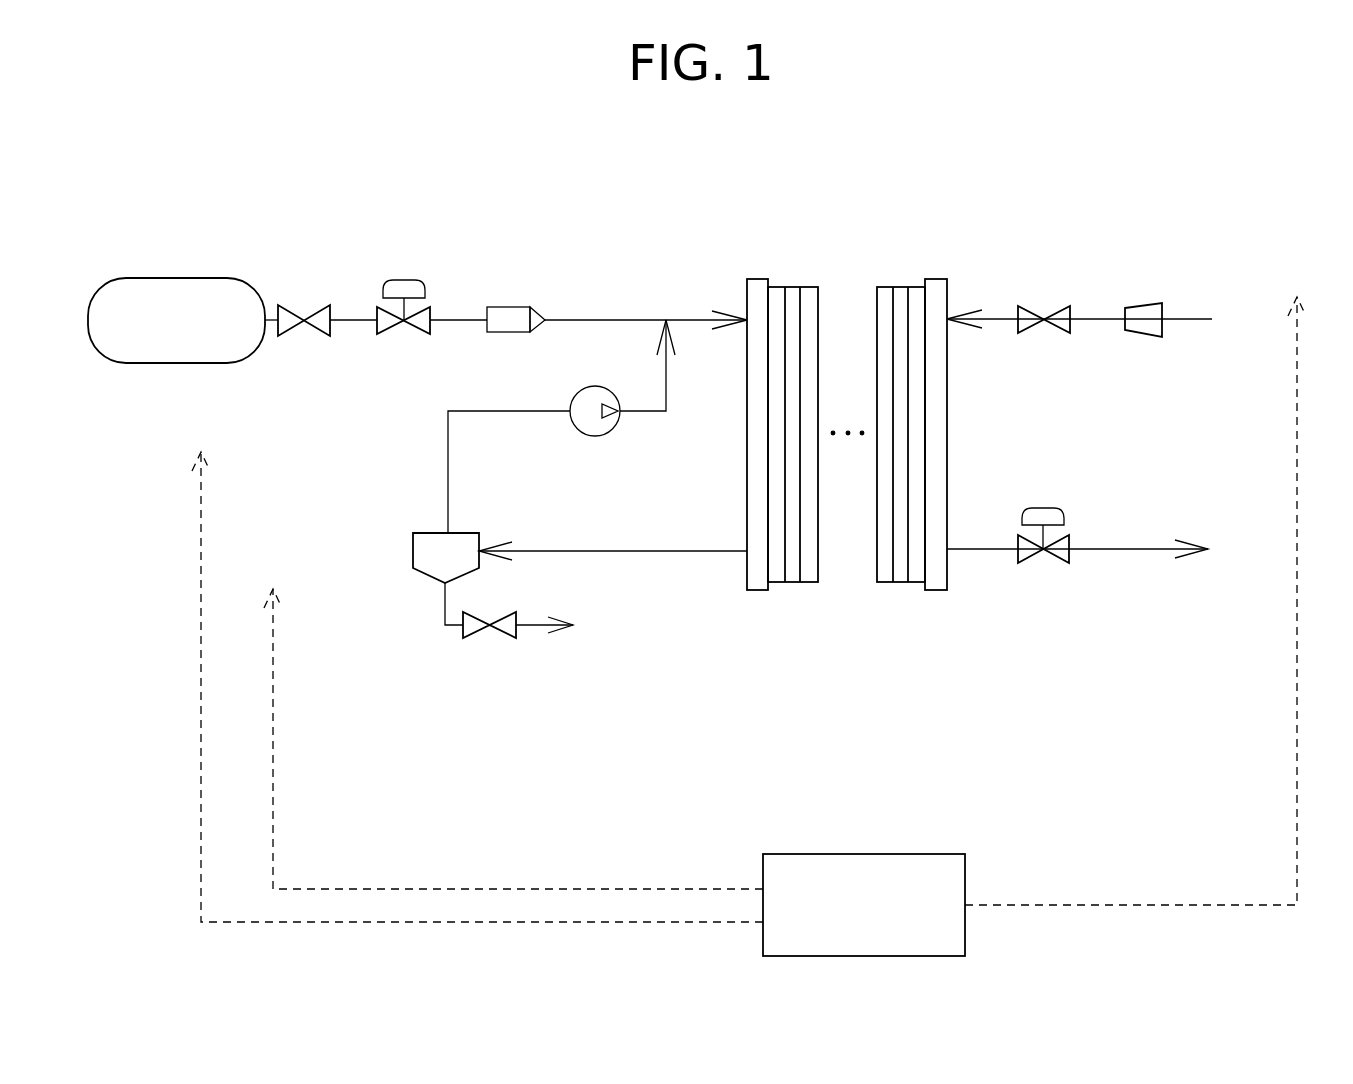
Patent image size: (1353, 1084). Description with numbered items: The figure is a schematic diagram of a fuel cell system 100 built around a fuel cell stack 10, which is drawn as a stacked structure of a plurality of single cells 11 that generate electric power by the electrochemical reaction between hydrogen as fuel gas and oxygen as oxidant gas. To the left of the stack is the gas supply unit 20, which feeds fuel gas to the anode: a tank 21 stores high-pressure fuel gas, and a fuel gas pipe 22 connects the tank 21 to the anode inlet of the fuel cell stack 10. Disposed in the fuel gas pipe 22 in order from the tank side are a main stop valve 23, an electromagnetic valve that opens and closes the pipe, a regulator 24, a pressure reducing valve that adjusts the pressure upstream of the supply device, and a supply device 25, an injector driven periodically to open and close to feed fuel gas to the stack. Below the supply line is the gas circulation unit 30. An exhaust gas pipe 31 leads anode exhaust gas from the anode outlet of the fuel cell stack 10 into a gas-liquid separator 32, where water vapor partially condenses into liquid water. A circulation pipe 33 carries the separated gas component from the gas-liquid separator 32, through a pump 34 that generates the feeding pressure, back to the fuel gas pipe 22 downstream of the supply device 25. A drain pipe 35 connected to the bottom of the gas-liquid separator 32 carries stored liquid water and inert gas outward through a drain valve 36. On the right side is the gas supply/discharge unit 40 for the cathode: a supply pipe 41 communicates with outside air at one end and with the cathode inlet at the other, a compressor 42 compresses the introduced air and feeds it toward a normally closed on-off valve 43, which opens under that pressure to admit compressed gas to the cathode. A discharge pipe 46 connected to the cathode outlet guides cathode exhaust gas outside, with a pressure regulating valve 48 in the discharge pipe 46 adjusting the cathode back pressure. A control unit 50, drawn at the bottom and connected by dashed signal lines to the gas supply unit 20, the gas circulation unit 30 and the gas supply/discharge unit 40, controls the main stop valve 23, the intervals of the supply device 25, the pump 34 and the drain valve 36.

The fuel cell system 100 is at (252, 163).
The fuel cell stack 10 is at (815, 258).
The single cell 11 is at (903, 287).
The gas supply unit 20 is at (260, 380).
The tank 21 is at (192, 278).
The fuel gas pipe 22 is at (607, 318).
The main stop valve 23 is at (322, 305).
The regulator 24 is at (410, 280).
The supply device 25 is at (520, 307).
The gas circulation unit 30 is at (330, 535).
The exhaust gas pipe 31 is at (706, 549).
The gas-liquid separator 32 is at (430, 533).
The circulation pipe 33 is at (447, 455).
The pump 34 is at (575, 395).
The drain pipe 35 is at (440, 598).
The drain valve 36 is at (478, 640).
The gas supply/discharge unit 40 is at (1227, 292).
The supply pipe 41 is at (1178, 322).
The compressor 42 is at (1135, 333).
The on-off valve 43 is at (1045, 335).
The discharge pipe 46 is at (1113, 548).
The pressure regulating valve 48 is at (1045, 508).
The control unit 50 is at (885, 854).